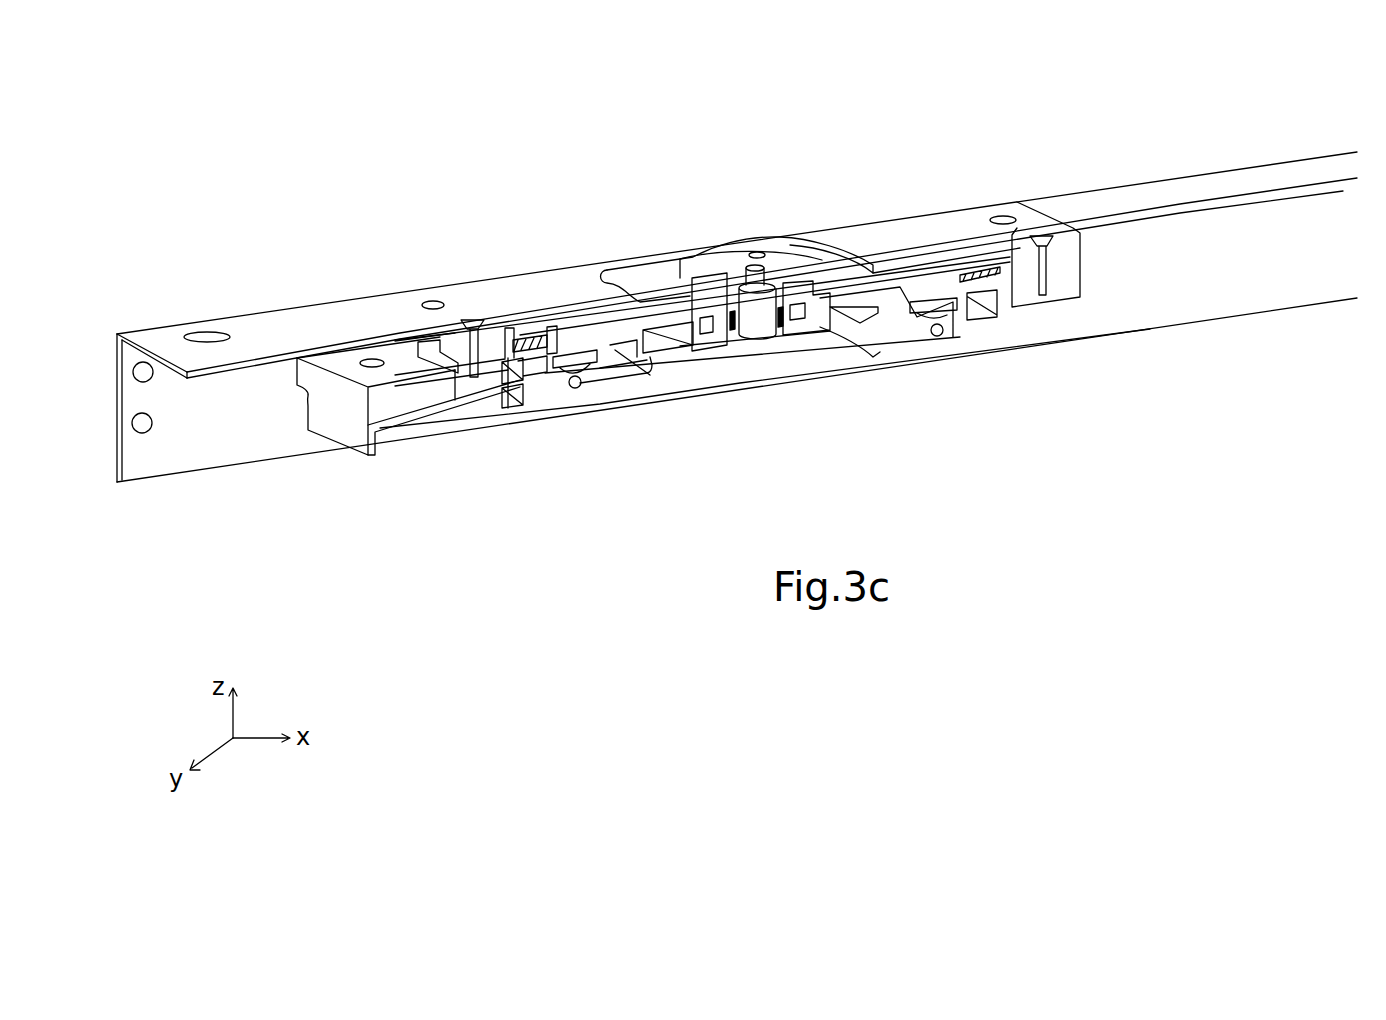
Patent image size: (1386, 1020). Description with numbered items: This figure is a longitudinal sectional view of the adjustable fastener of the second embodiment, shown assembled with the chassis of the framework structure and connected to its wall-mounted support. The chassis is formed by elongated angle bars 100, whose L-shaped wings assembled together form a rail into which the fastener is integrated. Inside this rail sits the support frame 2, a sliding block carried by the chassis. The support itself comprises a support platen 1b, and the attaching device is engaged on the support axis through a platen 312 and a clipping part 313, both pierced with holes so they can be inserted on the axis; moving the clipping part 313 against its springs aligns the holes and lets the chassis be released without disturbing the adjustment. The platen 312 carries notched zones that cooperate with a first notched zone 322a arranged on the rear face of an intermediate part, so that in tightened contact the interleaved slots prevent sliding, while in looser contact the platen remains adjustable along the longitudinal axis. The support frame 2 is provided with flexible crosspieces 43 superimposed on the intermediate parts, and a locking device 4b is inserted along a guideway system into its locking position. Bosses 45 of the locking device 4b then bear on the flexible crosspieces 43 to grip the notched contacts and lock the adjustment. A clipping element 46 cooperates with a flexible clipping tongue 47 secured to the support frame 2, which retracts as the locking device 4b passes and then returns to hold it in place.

The angle bar 100 is at (187, 433).
The support frame 2 is at (327, 413).
The support platen 1b is at (722, 272).
The platen 312 is at (810, 292).
The clipping part 313 is at (748, 345).
The flexible crosspiece 43 is at (566, 365).
The boss 45 is at (582, 388).
The clipping element 46 is at (523, 385).
The clipping tongue 47 is at (518, 387).
The locking device 4b is at (898, 335).
The first notched zone 322a is at (990, 272).